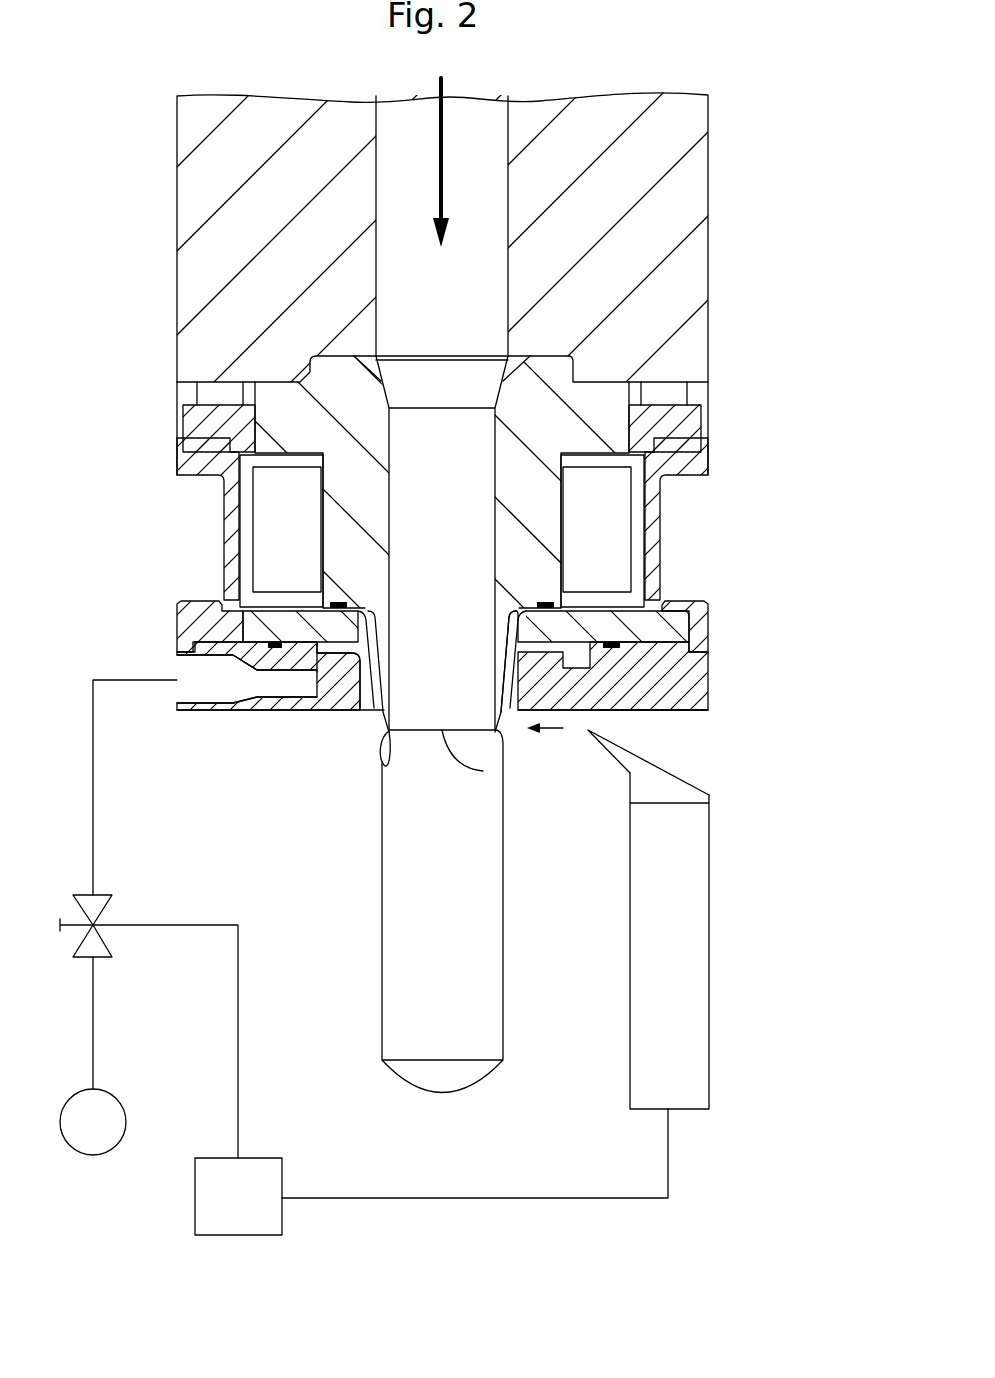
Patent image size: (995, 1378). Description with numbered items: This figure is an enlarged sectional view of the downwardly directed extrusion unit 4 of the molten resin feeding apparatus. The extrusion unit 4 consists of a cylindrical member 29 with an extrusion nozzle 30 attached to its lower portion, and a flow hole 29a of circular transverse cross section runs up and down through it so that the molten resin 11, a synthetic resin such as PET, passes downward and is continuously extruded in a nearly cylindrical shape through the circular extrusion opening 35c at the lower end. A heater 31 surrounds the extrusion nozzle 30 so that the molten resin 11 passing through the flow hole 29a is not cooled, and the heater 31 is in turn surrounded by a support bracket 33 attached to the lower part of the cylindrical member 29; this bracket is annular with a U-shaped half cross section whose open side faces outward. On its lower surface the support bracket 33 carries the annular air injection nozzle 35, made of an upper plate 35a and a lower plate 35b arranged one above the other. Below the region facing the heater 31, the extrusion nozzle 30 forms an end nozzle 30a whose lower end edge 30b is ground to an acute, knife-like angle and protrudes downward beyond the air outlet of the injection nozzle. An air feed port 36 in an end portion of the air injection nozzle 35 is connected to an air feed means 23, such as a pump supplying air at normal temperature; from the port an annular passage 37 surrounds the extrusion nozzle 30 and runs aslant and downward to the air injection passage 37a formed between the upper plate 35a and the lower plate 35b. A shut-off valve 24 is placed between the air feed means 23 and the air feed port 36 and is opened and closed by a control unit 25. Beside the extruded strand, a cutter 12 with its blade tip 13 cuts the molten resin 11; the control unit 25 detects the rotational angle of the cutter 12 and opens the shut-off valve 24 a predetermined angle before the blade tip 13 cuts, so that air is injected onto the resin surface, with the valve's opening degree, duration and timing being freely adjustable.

The extrusion unit 4 is at (731, 175).
The cylindrical member 29 is at (690, 272).
The flow hole 29a is at (392, 505).
The extrusion nozzle 30 is at (592, 395).
The end nozzle 30a is at (384, 684).
The end edge 30b is at (392, 764).
The heater 31 is at (262, 517).
The support bracket 33 is at (660, 523).
The air injection nozzle 35 is at (716, 690).
The upper plate 35a is at (656, 612).
The lower plate 35b is at (672, 710).
The extrusion opening 35c is at (483, 771).
The air feed port 36 is at (214, 694).
The annular passage 37 is at (336, 657).
The air injection passage 37a is at (505, 680).
The molten resin 11 is at (390, 932).
The cutter 12 is at (692, 932).
The blade tip 13 is at (588, 733).
The air feed means 23 is at (116, 1090).
The shut-off valve 24 is at (100, 894).
The control unit 25 is at (263, 1158).